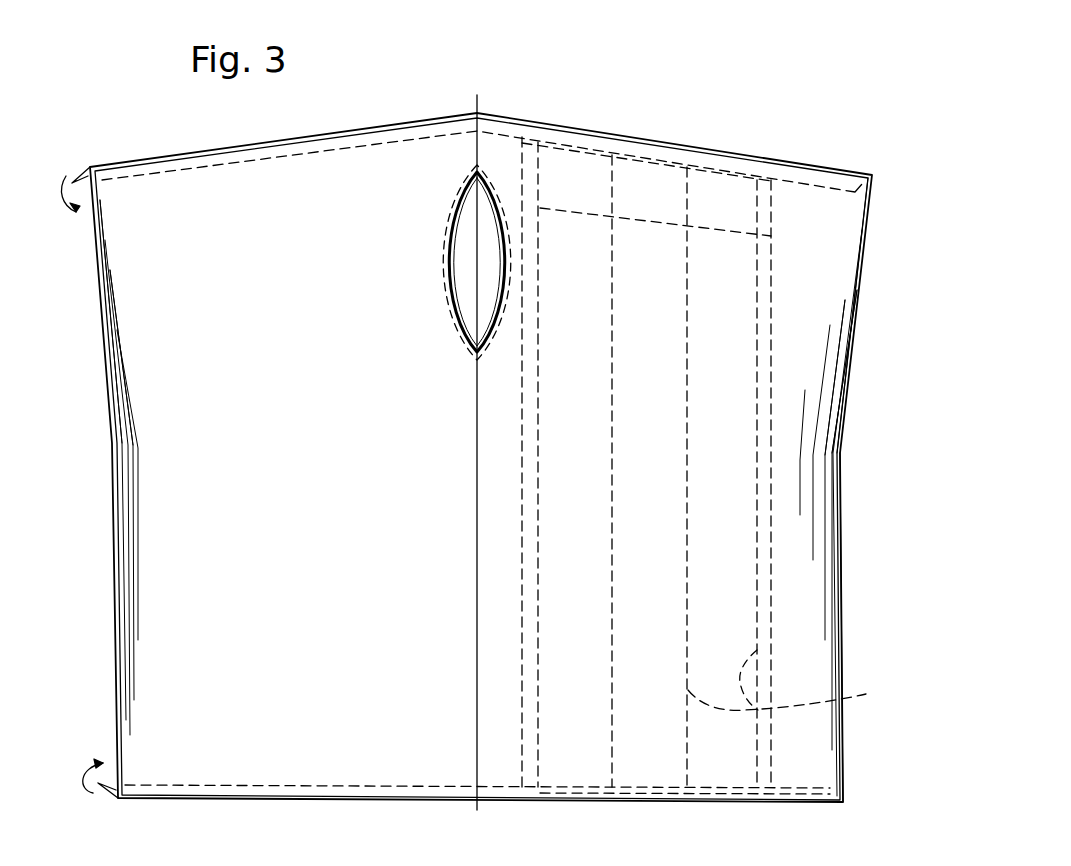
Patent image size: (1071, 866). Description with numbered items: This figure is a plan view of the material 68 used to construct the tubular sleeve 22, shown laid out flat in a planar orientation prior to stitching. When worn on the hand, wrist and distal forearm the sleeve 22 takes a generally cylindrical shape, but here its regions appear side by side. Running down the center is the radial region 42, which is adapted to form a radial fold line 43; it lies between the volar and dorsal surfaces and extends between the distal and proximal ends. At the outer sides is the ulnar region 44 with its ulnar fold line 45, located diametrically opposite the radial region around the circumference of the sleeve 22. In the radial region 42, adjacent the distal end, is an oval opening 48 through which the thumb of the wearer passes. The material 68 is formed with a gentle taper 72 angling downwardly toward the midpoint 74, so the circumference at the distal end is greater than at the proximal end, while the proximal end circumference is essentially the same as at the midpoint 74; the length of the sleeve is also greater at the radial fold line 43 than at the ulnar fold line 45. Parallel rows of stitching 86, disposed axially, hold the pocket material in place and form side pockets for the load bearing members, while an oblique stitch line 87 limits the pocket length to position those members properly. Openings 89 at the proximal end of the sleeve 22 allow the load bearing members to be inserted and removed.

The tubular sleeve 22 is at (238, 183).
The radial region 42 is at (438, 375).
The radial fold line 43 is at (480, 112).
The ulnar region 44 is at (825, 437).
The ulnar fold line 45 is at (850, 373).
The oval opening 48 is at (450, 222).
The material 68 is at (687, 145).
The gentle taper 72 is at (860, 297).
The midpoint 74 is at (842, 455).
The rows of stitching 86 is at (795, 681).
The oblique stitch line 87 is at (765, 172).
The openings 89 is at (670, 790).